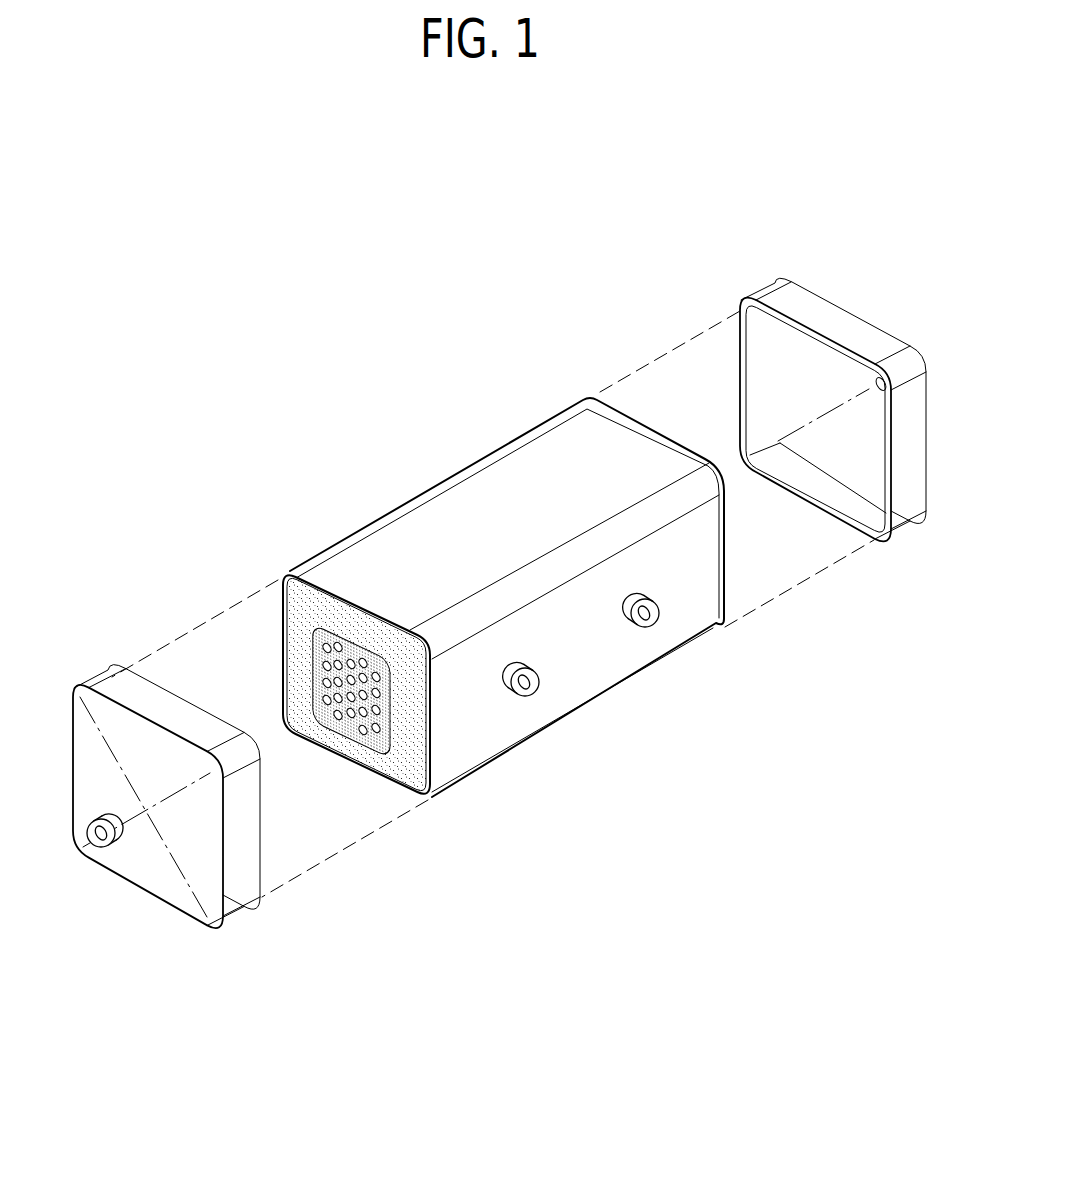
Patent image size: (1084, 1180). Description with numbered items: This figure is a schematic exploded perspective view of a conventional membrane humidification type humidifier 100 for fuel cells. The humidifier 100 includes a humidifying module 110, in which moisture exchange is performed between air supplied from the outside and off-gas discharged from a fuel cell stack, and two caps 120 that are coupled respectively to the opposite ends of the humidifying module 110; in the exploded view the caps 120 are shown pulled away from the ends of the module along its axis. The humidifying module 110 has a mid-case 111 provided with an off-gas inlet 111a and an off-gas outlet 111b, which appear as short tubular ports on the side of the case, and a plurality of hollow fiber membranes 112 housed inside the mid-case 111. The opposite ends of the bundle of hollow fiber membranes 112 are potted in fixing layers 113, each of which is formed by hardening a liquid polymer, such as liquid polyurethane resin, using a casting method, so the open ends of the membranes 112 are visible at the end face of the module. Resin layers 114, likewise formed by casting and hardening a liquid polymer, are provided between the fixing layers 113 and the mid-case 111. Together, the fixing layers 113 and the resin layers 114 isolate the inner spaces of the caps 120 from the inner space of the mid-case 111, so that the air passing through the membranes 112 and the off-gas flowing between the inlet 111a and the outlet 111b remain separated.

The membrane humidification type humidifier 100 is at (488, 244).
The humidifying module 110 is at (454, 476).
The mid-case 111 is at (687, 610).
The off-gas inlet 111a is at (522, 697).
The off-gas outlet 111b is at (641, 630).
The hollow fiber membranes 112 is at (365, 742).
The fixing layers 113 is at (388, 742).
The resin layers 114 is at (297, 615).
The caps 120 is at (827, 320).